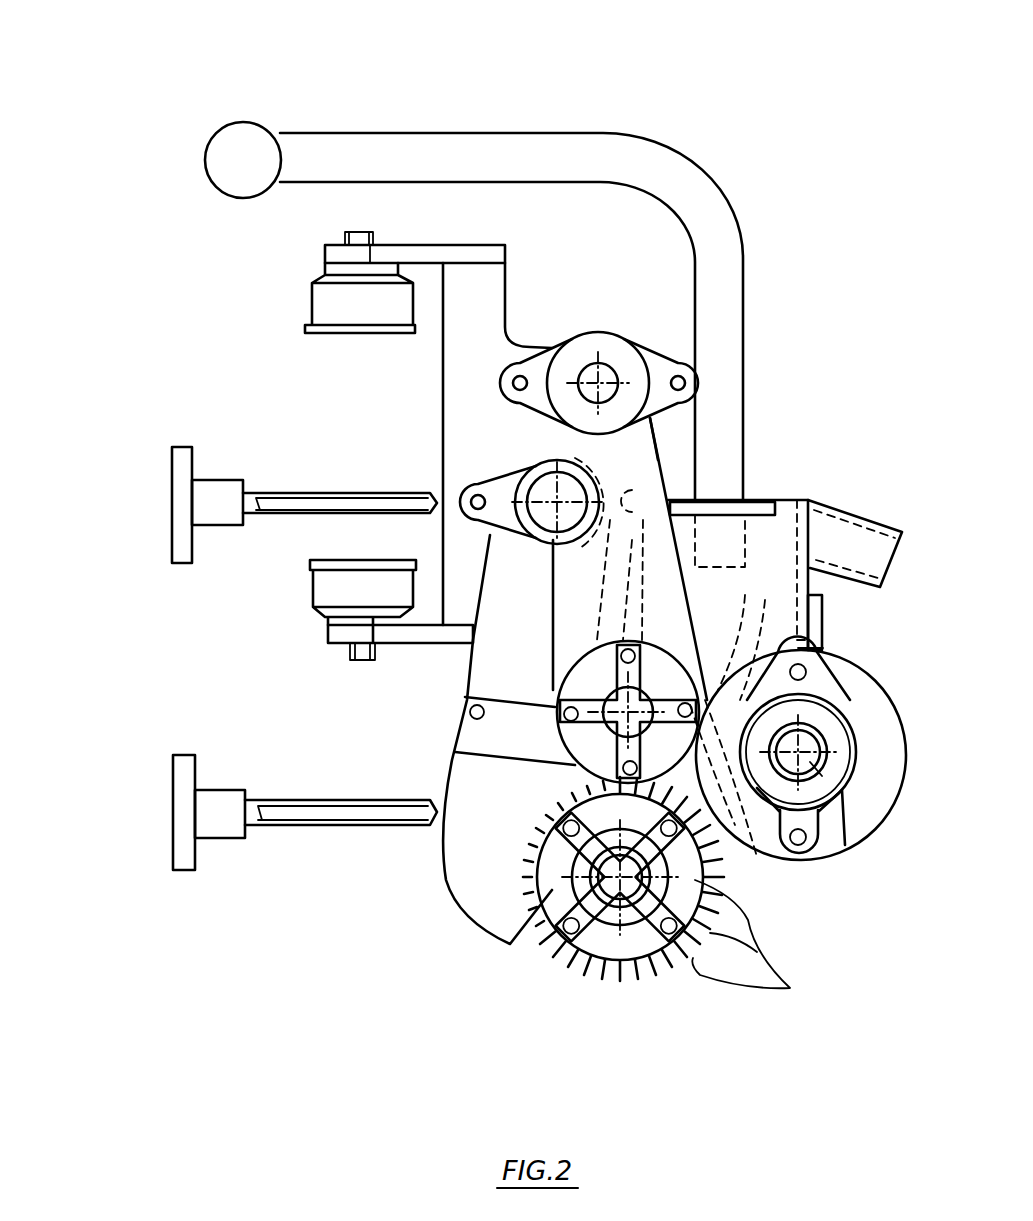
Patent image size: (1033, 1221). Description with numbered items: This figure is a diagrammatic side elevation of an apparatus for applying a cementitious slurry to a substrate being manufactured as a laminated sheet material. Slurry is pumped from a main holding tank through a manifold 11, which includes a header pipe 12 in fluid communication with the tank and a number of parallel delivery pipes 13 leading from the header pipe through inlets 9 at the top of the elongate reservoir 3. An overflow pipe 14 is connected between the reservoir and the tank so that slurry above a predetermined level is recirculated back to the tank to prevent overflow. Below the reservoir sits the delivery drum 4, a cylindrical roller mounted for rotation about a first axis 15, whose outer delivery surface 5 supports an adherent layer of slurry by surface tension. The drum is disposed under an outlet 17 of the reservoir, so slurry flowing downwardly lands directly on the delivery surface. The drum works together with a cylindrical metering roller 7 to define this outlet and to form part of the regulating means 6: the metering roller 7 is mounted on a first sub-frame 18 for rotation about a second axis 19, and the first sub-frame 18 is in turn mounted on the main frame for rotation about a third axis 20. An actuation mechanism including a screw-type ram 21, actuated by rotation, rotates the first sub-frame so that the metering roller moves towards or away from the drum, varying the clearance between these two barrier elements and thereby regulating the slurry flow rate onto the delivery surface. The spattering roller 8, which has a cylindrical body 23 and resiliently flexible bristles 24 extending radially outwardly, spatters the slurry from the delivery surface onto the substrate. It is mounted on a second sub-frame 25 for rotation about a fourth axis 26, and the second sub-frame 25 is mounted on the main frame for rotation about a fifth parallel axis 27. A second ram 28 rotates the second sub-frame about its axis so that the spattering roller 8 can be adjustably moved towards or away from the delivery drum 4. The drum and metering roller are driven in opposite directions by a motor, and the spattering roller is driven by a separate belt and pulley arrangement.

The elongate reservoir 3 is at (808, 500).
The delivery drum 4 is at (838, 668).
The outer delivery surface 5 is at (902, 690).
The regulating means 6 is at (735, 662).
The cylindrical metering roller 7 is at (705, 658).
The spattering roller 8 is at (507, 810).
The inlets 9 is at (720, 500).
The manifold 11 is at (316, 104).
The header pipe 12 is at (235, 125).
The parallel delivery pipes 13 is at (492, 122).
The overflow pipe 14 is at (866, 508).
The first axis 15 is at (838, 812).
The outlet 17 is at (758, 858).
The first sub-frame 18 is at (660, 428).
The second axis 19 is at (575, 700).
The third axis 20 is at (595, 378).
The ram 21 is at (358, 482).
The cylindrical body 23 is at (558, 901).
The bristles 24 is at (790, 988).
The second sub-frame 25 is at (465, 668).
The fourth axis 26 is at (603, 960).
The fifth parallel axis 27 is at (526, 470).
The second ram 28 is at (340, 822).